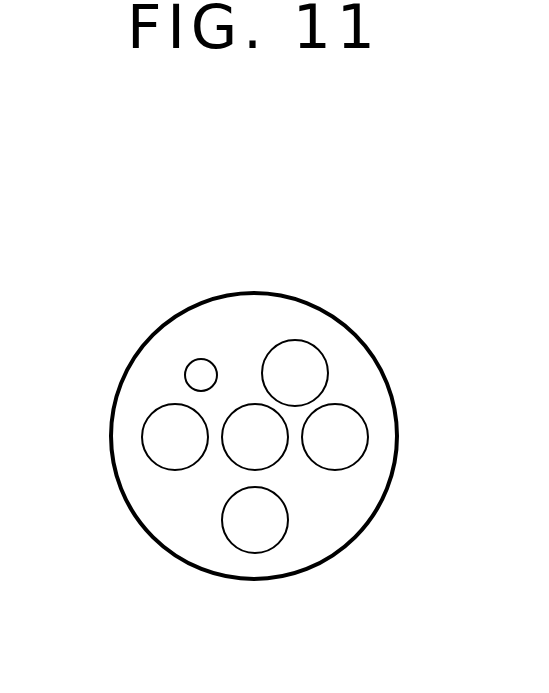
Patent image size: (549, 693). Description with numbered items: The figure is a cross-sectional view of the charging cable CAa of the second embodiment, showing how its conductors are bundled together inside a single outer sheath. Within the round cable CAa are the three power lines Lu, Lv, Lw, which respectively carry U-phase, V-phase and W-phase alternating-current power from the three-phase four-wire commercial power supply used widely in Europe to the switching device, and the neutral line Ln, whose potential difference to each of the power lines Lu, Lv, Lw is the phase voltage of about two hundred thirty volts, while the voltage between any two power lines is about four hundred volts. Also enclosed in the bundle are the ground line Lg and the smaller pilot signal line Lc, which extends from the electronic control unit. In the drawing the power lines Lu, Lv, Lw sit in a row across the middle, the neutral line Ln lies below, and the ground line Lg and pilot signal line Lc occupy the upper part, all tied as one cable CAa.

The charging cable CAa is at (254, 293).
The pilot signal line Lc is at (200, 358).
The ground line Lg is at (310, 342).
The power line Lu is at (141, 436).
The power line Lv is at (232, 458).
The power line Lw is at (369, 436).
The neutral line Ln is at (254, 553).